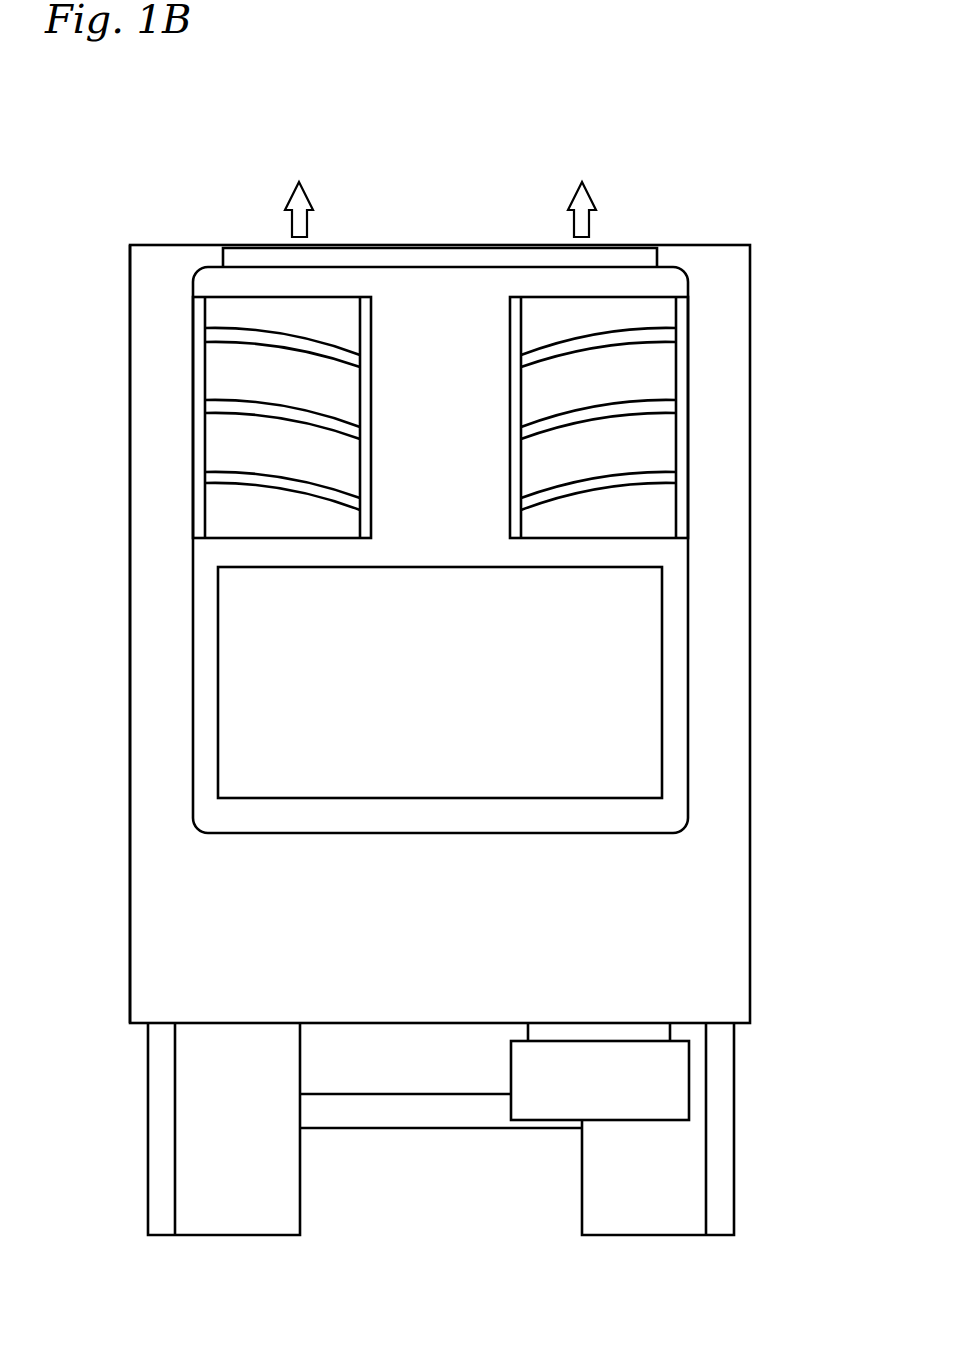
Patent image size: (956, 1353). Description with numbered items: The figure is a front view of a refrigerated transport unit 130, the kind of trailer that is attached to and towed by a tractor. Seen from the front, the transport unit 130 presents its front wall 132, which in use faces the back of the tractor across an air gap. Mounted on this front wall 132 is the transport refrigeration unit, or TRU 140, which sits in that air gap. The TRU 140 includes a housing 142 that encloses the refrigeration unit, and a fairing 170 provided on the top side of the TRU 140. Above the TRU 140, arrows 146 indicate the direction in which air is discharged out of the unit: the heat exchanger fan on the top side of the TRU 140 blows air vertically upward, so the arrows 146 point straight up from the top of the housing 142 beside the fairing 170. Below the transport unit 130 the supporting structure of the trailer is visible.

The transport unit 130 is at (752, 840).
The front wall 132 is at (169, 853).
The TRU 140 is at (482, 148).
The housing 142 is at (689, 697).
The arrows 146 is at (297, 185).
The fairing 170 is at (488, 246).